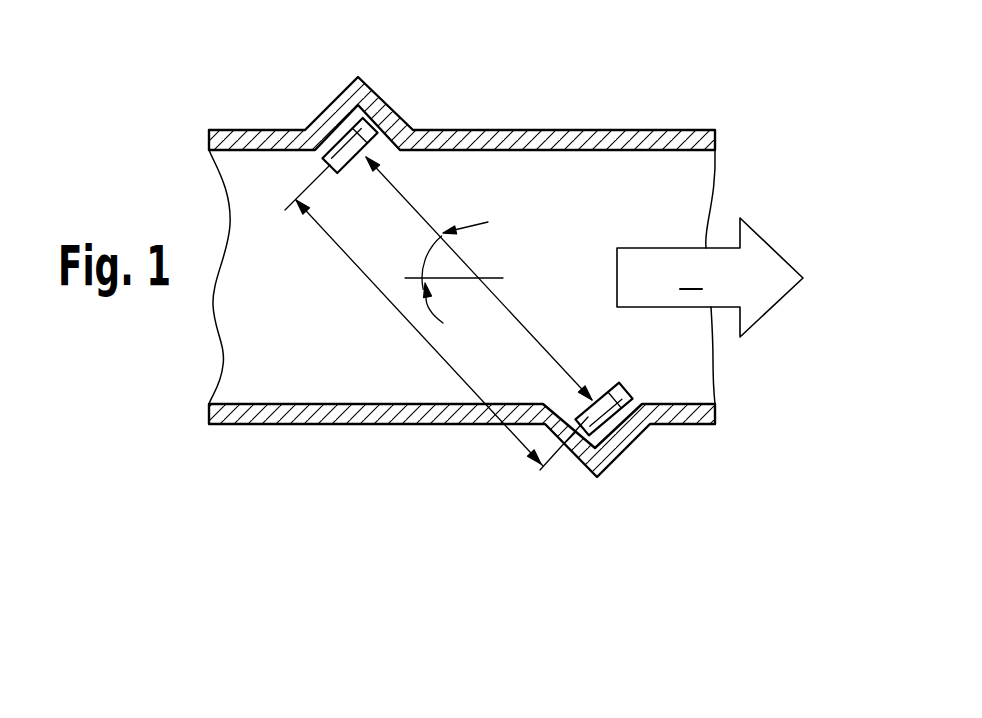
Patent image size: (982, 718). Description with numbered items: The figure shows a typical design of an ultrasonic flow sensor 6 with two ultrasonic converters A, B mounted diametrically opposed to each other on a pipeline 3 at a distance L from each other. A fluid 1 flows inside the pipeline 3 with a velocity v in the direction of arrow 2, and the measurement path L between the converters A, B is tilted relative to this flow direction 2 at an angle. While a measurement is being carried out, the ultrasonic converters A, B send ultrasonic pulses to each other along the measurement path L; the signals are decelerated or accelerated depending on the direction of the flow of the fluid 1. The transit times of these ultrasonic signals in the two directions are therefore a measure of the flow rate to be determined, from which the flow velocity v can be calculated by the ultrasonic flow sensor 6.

The fluid 1 is at (550, 186).
The arrow 2 is at (765, 268).
The pipeline 3 is at (604, 130).
The ultrasonic flow sensor 6 is at (505, 68).
The ultrasonic converter A is at (382, 114).
The ultrasonic converter B is at (622, 386).
The measurement path L is at (408, 320).
The velocity v is at (691, 274).